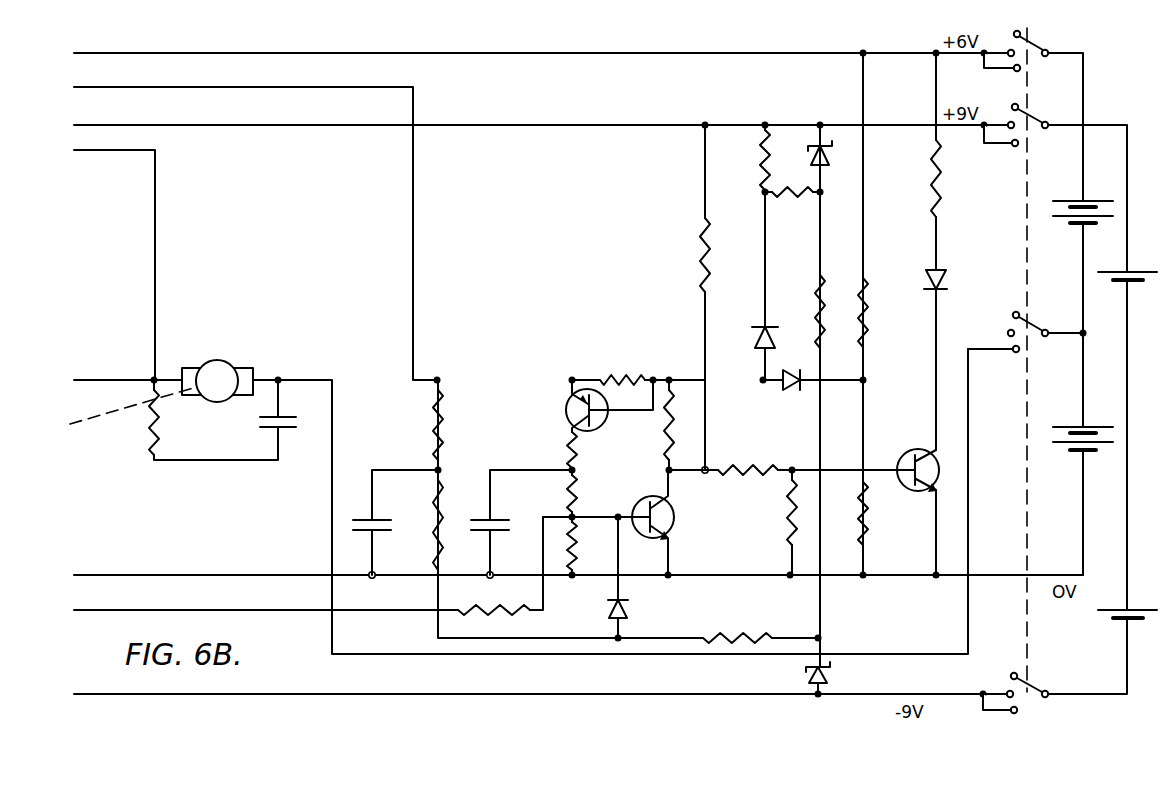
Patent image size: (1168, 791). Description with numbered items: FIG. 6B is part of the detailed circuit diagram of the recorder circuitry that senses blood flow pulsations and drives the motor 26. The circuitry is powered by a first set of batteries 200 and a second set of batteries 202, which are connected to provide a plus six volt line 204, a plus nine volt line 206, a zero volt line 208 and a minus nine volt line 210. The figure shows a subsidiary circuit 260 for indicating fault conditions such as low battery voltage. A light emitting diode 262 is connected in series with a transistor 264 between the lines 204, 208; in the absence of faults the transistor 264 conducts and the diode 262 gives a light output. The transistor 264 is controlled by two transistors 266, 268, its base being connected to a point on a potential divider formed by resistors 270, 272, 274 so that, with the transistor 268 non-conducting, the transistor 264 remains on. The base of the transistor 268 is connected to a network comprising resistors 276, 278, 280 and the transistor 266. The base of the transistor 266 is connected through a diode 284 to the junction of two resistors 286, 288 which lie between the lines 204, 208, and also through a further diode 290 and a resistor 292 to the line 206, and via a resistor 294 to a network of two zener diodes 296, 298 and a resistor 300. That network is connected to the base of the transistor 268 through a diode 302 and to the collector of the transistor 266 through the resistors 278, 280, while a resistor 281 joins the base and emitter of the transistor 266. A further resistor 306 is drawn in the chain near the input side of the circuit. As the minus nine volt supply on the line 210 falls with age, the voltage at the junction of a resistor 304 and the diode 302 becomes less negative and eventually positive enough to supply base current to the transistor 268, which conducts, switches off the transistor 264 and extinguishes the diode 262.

The motor 26 is at (208, 398).
The first set of batteries 200 is at (1062, 228).
The second set of batteries 202 is at (1108, 288).
The +6 volt line 204 is at (893, 55).
The +9 volt line 206 is at (888, 128).
The zero volt line 208 is at (890, 578).
The −9 volt line 210 is at (912, 692).
The subsidiary circuit 260 is at (661, 374).
The light emitting diode 262 is at (928, 282).
The transistor 264 is at (911, 455).
The transistor 266 is at (599, 424).
The transistor 268 is at (676, 512).
The resistor 270 is at (700, 264).
The resistor 272 is at (746, 463).
The resistor 274 is at (788, 530).
The resistor 276 is at (584, 558).
The resistor 278 is at (568, 496).
The resistor 280 is at (580, 450).
The resistor 281 is at (620, 373).
The diode 284 is at (790, 392).
The resistor 286 is at (867, 333).
The resistor 288 is at (868, 524).
The diode 290 is at (757, 337).
The resistor 292 is at (775, 150).
The resistor 294 is at (797, 198).
The zener diode 296 is at (830, 158).
The zener diode 298 is at (829, 677).
The resistor 300 is at (816, 305).
The diode 302 is at (626, 611).
The resistor 304 is at (433, 530).
The resistor 306 is at (442, 429).